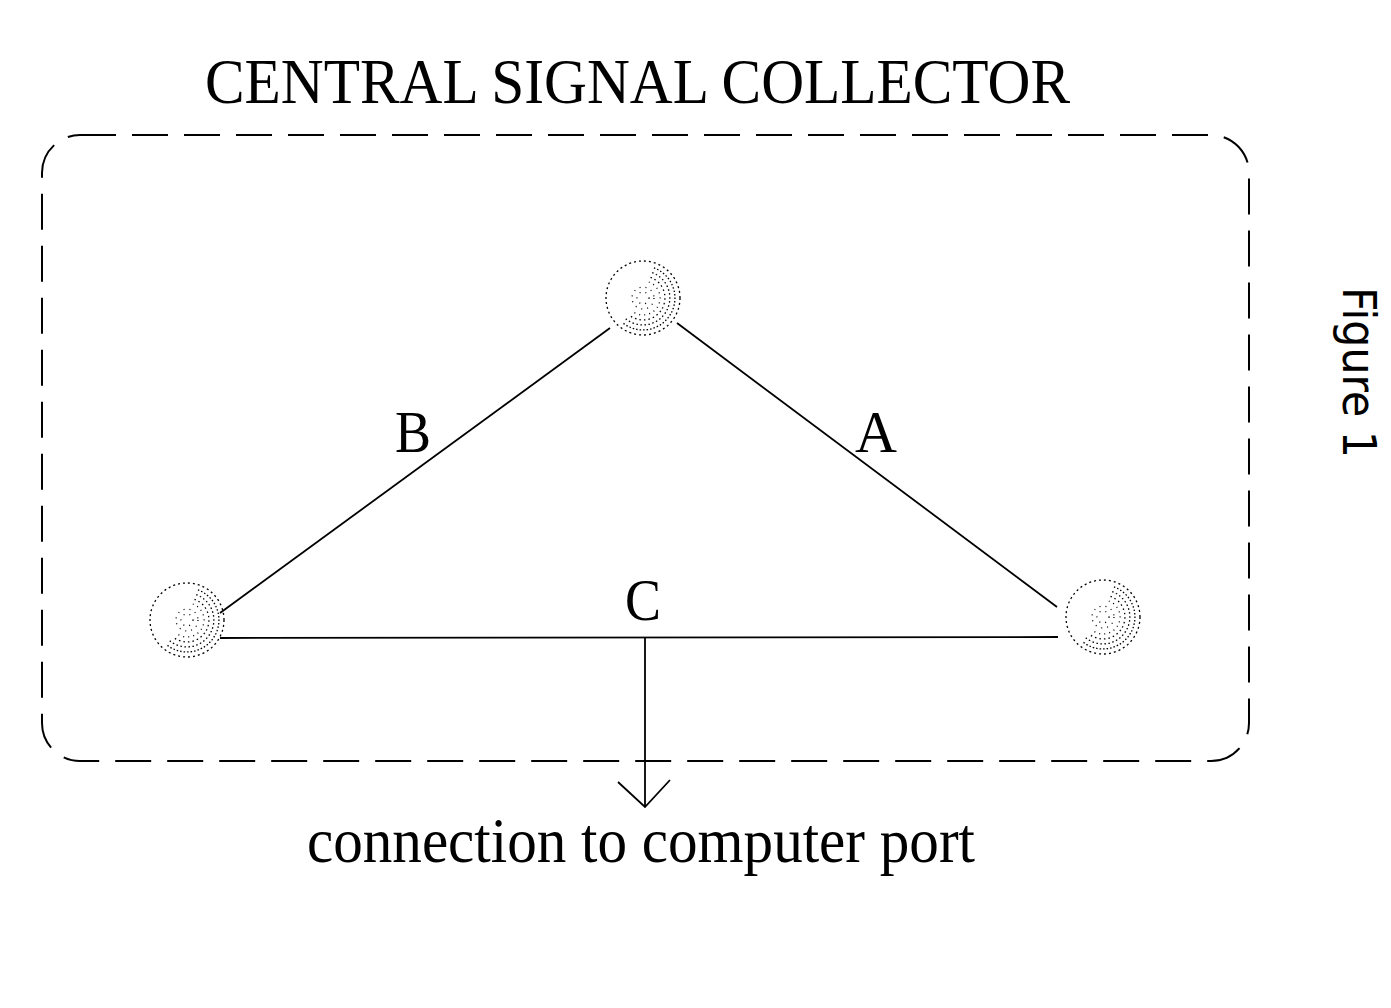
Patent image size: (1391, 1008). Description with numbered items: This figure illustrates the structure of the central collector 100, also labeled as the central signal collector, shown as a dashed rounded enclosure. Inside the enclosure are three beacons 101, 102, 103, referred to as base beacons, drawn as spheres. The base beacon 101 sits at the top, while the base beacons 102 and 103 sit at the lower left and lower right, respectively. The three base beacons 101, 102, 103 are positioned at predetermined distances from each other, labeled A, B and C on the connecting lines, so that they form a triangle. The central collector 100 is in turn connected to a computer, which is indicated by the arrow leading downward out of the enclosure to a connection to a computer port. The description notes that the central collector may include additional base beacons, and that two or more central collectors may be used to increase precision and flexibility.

The central collector 100 is at (645, 448).
The base beacon 101 is at (641, 266).
The base beacon 102 is at (174, 642).
The base beacon 103 is at (1104, 645).